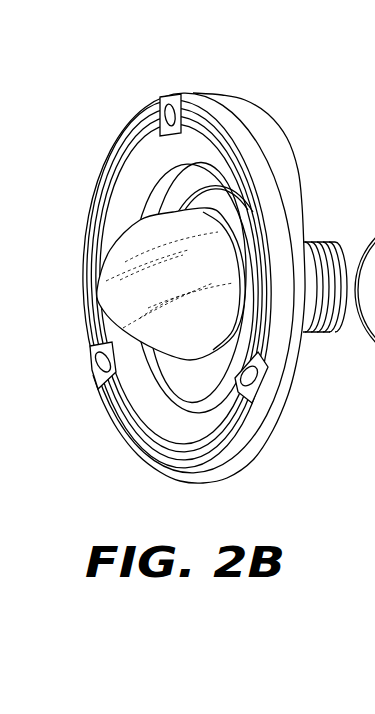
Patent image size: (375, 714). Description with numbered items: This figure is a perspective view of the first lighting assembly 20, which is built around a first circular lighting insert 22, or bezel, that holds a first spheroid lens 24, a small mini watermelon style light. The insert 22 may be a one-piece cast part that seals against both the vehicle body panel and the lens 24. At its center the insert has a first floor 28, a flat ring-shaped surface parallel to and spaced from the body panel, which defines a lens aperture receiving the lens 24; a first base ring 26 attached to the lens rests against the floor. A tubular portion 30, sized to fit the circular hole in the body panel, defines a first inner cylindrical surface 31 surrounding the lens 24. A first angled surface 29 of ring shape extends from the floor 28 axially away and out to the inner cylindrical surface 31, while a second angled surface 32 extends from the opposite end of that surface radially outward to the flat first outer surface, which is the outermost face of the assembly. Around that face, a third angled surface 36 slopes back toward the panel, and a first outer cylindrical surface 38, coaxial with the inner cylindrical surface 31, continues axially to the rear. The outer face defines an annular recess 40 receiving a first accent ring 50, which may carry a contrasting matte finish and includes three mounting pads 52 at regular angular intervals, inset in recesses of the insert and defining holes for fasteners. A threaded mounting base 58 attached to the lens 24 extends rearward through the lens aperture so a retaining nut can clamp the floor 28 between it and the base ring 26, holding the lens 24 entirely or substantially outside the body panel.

The first lighting assembly 20 is at (144, 79).
The first circular lighting insert 22 is at (242, 96).
The first spheroid lens 24 is at (128, 250).
The first base ring 26 is at (218, 203).
The first floor 28 is at (172, 385).
The first angled surface 29 is at (195, 398).
The tubular portion 30 is at (153, 378).
The first inner cylindrical surface 31 is at (149, 325).
The second angled surface 32 is at (129, 182).
The third angled surface 36 is at (253, 153).
The first outer cylindrical surface 38 is at (298, 333).
The annular recess 40 is at (188, 106).
The first accent ring 50 is at (132, 127).
The mounting pads 52 is at (97, 362).
The mounting base 58 is at (326, 242).